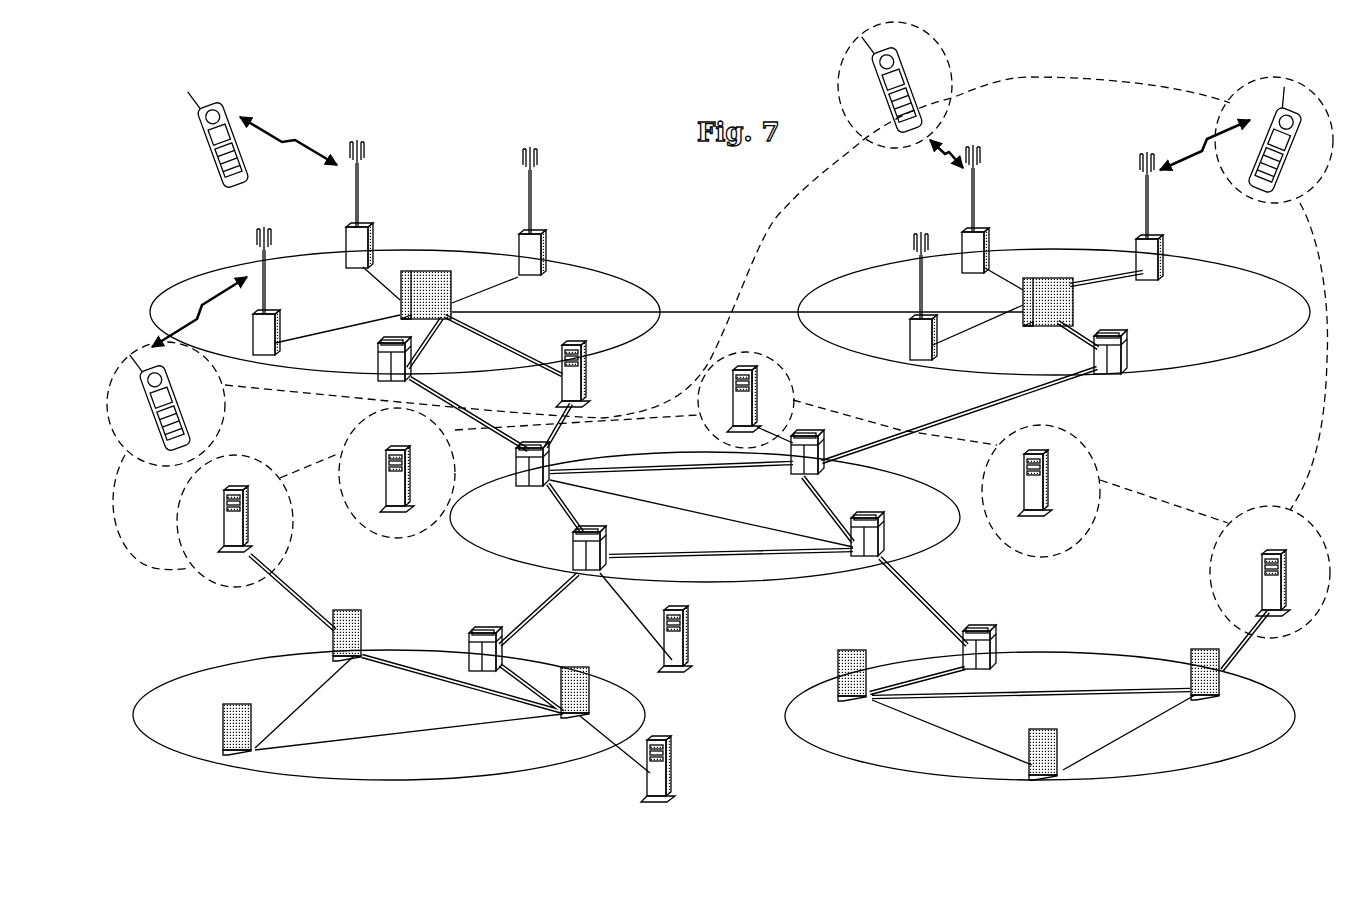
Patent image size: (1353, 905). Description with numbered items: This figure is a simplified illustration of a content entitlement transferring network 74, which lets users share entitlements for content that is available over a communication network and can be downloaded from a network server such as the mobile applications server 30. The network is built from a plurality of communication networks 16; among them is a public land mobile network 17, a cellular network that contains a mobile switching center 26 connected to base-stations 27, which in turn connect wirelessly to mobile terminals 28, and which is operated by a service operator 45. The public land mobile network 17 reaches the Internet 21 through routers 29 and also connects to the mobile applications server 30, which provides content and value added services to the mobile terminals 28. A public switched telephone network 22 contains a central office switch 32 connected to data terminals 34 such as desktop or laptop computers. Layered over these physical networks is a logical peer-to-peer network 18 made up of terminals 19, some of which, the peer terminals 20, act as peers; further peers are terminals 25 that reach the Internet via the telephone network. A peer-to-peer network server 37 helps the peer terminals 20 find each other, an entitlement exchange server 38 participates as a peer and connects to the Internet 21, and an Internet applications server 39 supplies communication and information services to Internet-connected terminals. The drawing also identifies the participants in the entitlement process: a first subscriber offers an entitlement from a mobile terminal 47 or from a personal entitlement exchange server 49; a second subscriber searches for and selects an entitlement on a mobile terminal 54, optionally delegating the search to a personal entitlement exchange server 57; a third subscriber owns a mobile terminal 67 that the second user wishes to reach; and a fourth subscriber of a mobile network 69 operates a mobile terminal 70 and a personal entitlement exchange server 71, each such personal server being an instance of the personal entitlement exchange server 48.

The communication networks 16 is at (597, 253).
The public land mobile network (PLMN) 17 is at (632, 275).
The peer-to-peer network 18 is at (1013, 80).
The terminals 19 is at (721, 334).
The peer terminals 20 is at (719, 263).
The Internet 21 is at (718, 582).
The public switched telephone network (PSTN) 22 is at (215, 765).
The terminals connected via PSTN or PSDN 25 is at (754, 544).
The mobile switching center (MSC) 26 is at (432, 270).
The base-stations 27 is at (726, 264).
The mobile terminals 28 is at (719, 263).
The routers 29 is at (378, 362).
The mobile applications server 30 is at (590, 380).
The central office switch (CO) 32 is at (368, 635).
The data terminals 34 is at (680, 782).
The peer-to-peer network server 37 is at (1057, 495).
The entitlement exchange server 38 is at (770, 385).
The Internet applications server 39 is at (695, 670).
The service operator 45 is at (658, 300).
The mobile terminal of first subscriber 47 is at (210, 445).
The personal entitlement exchange server 48 is at (380, 455).
The personal entitlement exchange server of first subscriber 49 is at (280, 542).
The mobile terminal of second subscriber 54 is at (1250, 85).
The personal entitlement exchange server of second subscriber 57 is at (1020, 495).
The mobile terminal of third subscriber 67 is at (225, 190).
The mobile network 69 is at (935, 252).
The mobile terminal of fourth subscriber 70 is at (940, 115).
The personal entitlement exchange server of fourth subscriber 71 is at (385, 518).
The content entitlement transferring network 74 is at (737, 193).